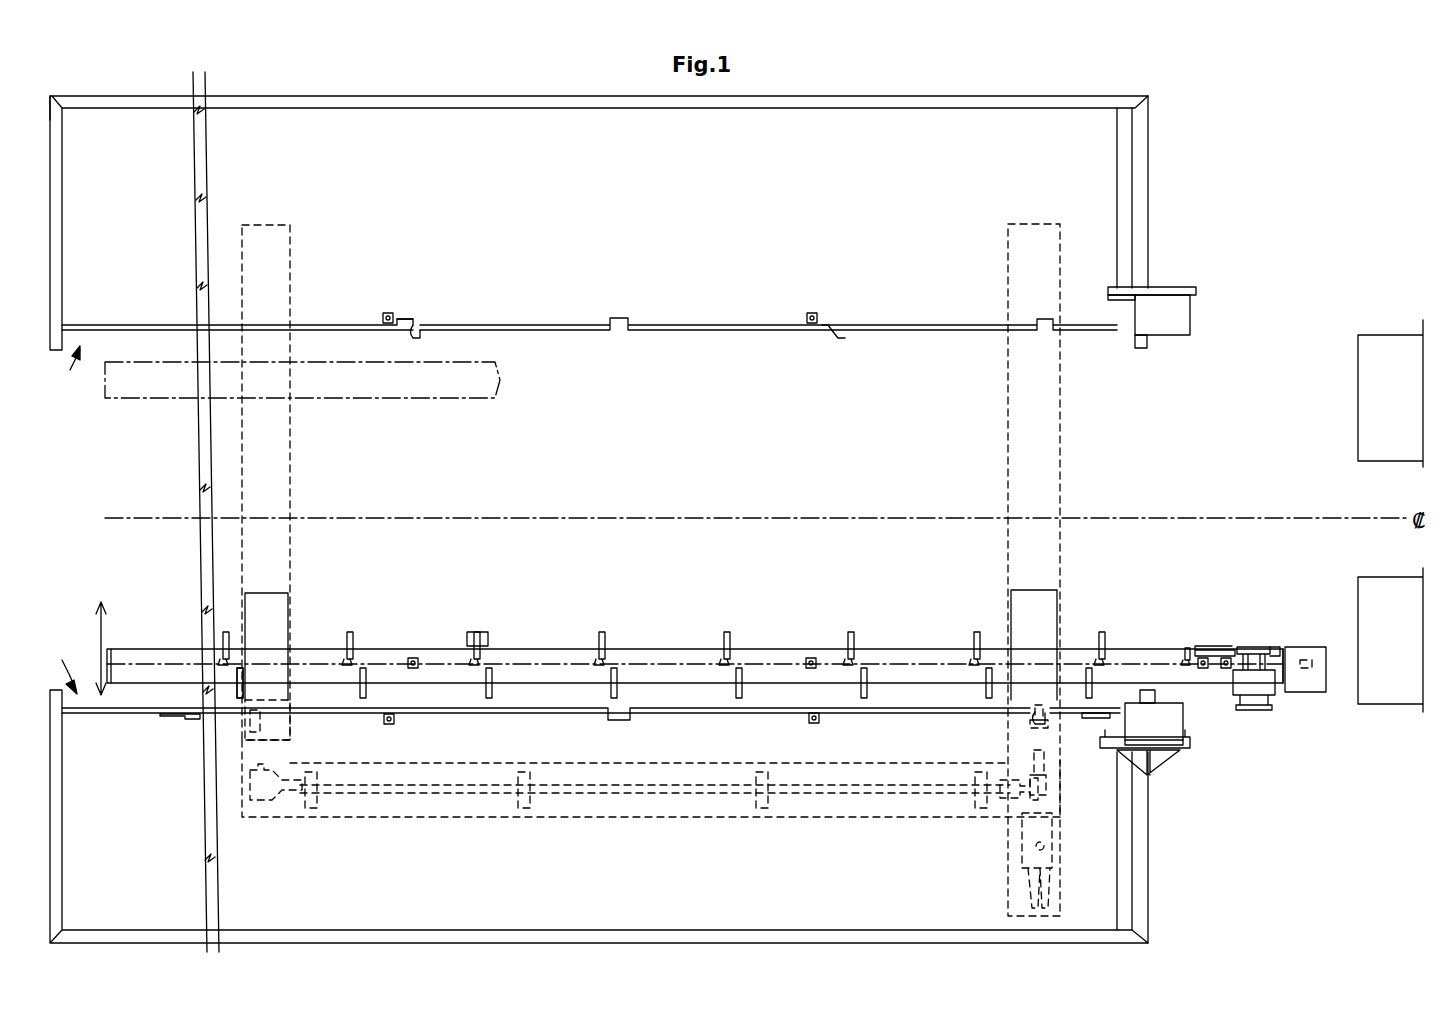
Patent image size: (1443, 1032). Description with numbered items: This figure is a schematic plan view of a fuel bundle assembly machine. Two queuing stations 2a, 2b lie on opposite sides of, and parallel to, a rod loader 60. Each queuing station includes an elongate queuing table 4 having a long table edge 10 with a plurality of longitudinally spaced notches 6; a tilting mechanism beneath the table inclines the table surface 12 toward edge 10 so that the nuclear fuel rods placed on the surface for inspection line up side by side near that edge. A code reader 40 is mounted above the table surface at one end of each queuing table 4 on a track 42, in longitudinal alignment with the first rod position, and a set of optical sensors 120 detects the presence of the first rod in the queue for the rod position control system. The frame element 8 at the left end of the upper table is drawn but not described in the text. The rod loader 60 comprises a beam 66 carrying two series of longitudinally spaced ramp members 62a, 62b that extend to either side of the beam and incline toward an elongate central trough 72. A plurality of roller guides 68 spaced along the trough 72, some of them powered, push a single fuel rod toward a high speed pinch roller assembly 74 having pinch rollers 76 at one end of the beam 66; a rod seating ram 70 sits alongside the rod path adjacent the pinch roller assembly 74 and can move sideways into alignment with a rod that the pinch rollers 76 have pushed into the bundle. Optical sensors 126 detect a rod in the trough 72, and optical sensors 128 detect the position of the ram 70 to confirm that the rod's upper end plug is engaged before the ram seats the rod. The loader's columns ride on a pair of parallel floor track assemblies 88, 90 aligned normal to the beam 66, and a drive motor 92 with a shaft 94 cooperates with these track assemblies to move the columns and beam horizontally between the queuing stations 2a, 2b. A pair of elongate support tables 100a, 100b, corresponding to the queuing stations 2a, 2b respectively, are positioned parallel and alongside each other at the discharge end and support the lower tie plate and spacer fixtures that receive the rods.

The queuing table 4 is at (258, 94).
The frame post 8 is at (52, 112).
The queuing station 2a is at (62, 369).
The queuing station 2b is at (59, 665).
The notches 6 is at (843, 732).
The long table edge 10 is at (575, 329).
The table surface 12 is at (525, 300).
The code reader 40 is at (1192, 315).
The track 42 is at (1156, 294).
The rod loader 60 is at (172, 632).
The ramp members 62a is at (704, 654).
The ramp members 62b is at (744, 684).
The beam 66 is at (562, 647).
The roller guides 68 is at (600, 672).
The rod seating ram 70 is at (1256, 647).
The central trough 72 is at (332, 660).
The pinch roller assembly 74 is at (1301, 694).
The pinch rollers 76 is at (1308, 660).
The floor track assembly 88 is at (292, 425).
The floor track assembly 90 is at (1008, 425).
The drive motor 92 is at (1022, 850).
The shaft 94 is at (665, 795).
The support table 100a is at (1358, 382).
The support table 100b is at (1358, 588).
The optical sensors 120 is at (383, 313).
The optical sensors 126 is at (412, 656).
The optical sensors 128 is at (1222, 670).